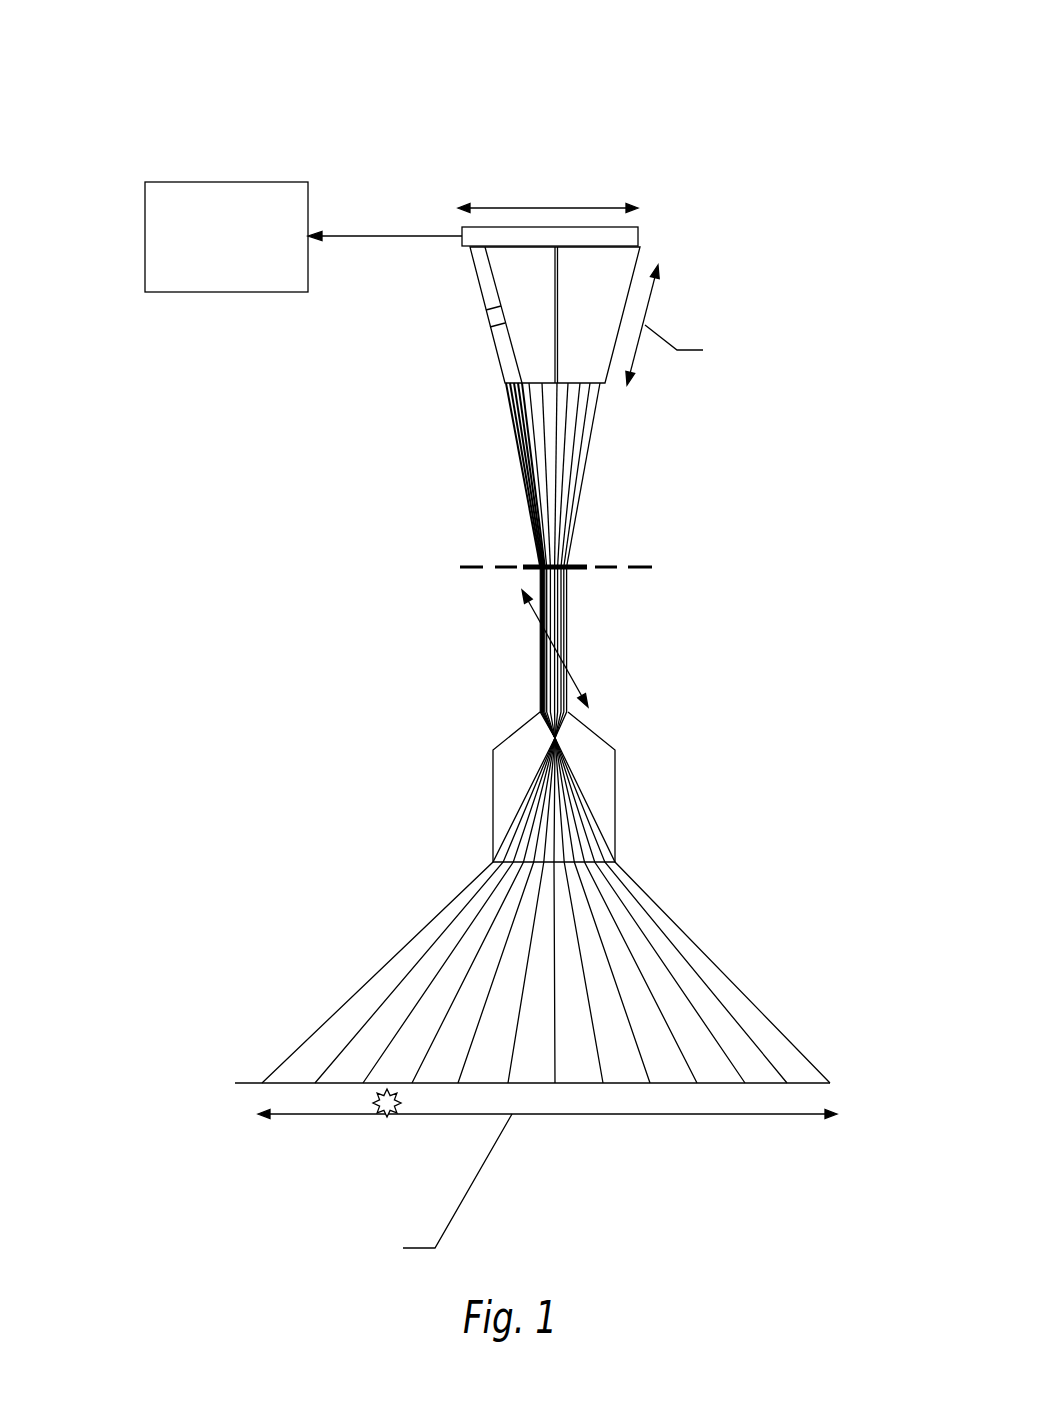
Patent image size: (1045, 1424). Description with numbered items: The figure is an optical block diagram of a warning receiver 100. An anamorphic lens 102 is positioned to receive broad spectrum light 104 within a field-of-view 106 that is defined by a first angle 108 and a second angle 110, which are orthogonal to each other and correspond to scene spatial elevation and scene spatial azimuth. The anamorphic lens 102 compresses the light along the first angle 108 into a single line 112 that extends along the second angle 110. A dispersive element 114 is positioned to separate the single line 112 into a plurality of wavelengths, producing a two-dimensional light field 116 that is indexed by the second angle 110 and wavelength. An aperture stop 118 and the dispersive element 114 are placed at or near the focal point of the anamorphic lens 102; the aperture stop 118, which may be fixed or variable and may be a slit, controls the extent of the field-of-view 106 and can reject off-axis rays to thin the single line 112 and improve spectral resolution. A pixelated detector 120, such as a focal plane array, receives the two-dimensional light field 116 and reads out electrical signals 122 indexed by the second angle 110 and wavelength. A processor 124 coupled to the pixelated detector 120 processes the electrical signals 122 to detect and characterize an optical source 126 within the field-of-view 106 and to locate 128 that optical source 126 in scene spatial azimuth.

The warning receiver 100 is at (120, 47).
The anamorphic lens 102 is at (615, 780).
The broad spectrum light 104 is at (366, 968).
The field-of-view 106 is at (759, 877).
The first angle 108 is at (272, 1268).
The second angle 110 is at (820, 368).
The single line 112 is at (573, 677).
The dispersive element 114 is at (575, 562).
The two-dimensional light field 116 is at (565, 463).
The aperture stop 118 is at (652, 567).
The pixelated detector 120 is at (633, 233).
The electrical signals 122 is at (395, 236).
The processor 124 is at (225, 182).
The optical source 126 is at (387, 1118).
The locate 128 is at (490, 315).